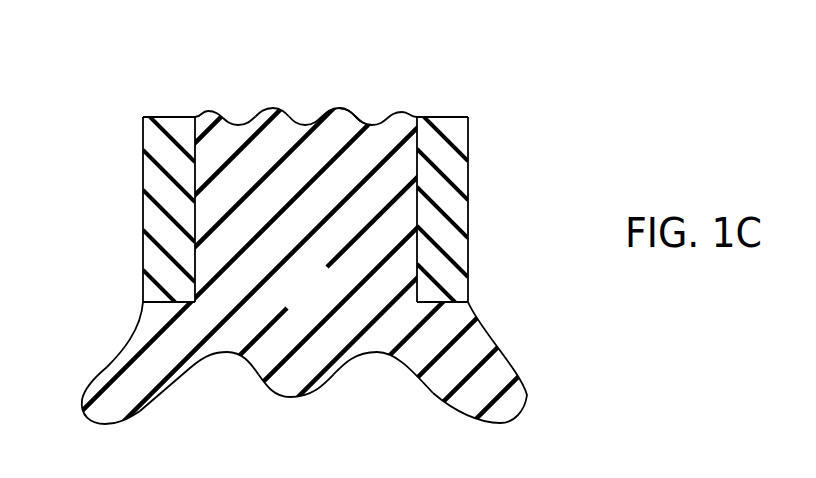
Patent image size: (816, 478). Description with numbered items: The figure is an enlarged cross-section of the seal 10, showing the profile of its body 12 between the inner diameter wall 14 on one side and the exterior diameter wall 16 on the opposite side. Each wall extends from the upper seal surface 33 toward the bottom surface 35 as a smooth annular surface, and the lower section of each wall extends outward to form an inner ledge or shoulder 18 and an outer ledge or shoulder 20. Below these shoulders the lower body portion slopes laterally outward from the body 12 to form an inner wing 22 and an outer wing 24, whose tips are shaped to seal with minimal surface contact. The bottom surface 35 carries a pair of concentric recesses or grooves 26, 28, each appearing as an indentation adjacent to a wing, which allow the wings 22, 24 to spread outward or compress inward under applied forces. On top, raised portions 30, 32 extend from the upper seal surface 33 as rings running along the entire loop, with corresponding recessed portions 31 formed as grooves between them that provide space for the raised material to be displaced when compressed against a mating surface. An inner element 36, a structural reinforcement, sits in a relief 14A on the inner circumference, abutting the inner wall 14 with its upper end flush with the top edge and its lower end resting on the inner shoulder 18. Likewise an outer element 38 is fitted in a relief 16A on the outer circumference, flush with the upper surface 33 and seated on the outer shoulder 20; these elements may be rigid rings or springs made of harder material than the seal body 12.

The seal 10 is at (565, 118).
The body 12 is at (320, 297).
The inner diameter wall 14 is at (195, 117).
The relief 14A is at (195, 217).
The exterior diameter wall 16 is at (417, 117).
The relief 16A is at (419, 249).
The inner ledge or shoulder 18 is at (153, 302).
The outer ledge or shoulder 20 is at (427, 300).
The inner wing 22 is at (110, 400).
The outer wing 24 is at (513, 397).
The recess or groove 26 is at (226, 353).
The recess or groove 28 is at (378, 353).
The raised portion 30 is at (270, 110).
The recessed portion 31 is at (238, 125).
The raised portion 32 is at (338, 110).
The upper seal surface 33 is at (355, 110).
The bottom surface 35 is at (297, 400).
The inner element 36 is at (143, 168).
The outer element 38 is at (460, 210).